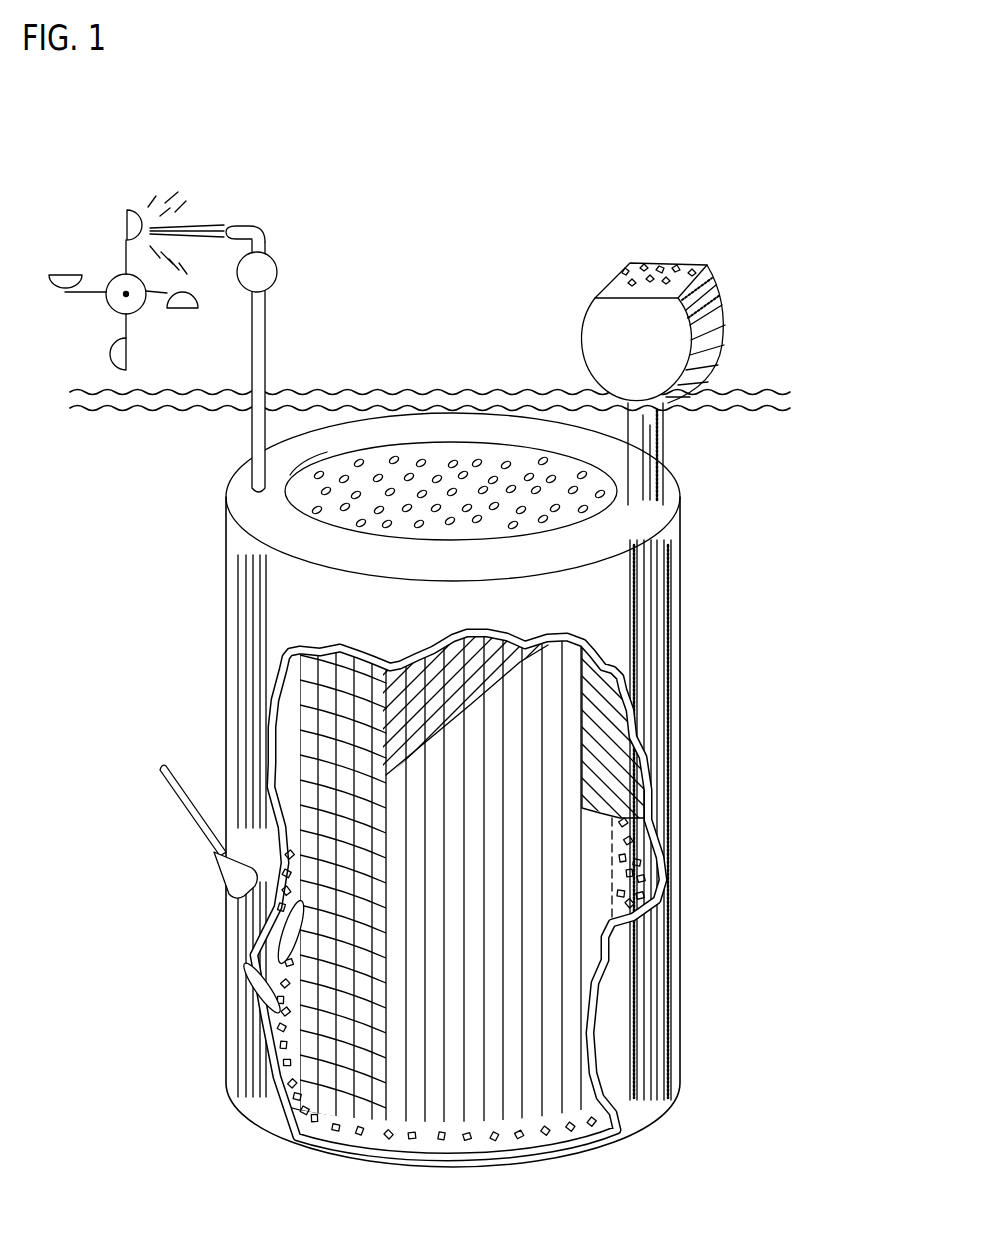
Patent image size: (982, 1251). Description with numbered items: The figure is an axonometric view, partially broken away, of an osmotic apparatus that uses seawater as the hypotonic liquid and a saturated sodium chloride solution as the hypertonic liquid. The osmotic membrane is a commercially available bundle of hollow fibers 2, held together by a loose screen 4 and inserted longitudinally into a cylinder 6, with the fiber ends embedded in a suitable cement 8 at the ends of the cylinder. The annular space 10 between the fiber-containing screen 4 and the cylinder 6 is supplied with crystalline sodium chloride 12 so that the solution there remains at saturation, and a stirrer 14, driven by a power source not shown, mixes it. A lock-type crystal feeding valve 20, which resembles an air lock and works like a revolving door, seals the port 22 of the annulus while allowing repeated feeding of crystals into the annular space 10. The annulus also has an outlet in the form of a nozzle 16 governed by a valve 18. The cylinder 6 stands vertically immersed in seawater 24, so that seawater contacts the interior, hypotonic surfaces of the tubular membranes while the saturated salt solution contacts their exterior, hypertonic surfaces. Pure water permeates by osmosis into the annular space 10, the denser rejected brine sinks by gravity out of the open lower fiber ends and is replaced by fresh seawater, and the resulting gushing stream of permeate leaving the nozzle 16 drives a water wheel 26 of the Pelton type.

The hollow fibers 2 is at (412, 462).
The loose screen 4 is at (310, 727).
The cylinder 6 is at (228, 605).
The cement 8 is at (327, 487).
The annular space 10 is at (262, 1017).
The crystalline sodium chloride 12 is at (280, 1033).
The stirrer 14 is at (174, 800).
The nozzle 16 is at (249, 224).
The valve 18 is at (277, 268).
The lock-type crystal feeding valve 20 is at (588, 322).
The port 22 is at (663, 458).
The seawater 24 is at (160, 389).
The water wheel 26 is at (62, 295).